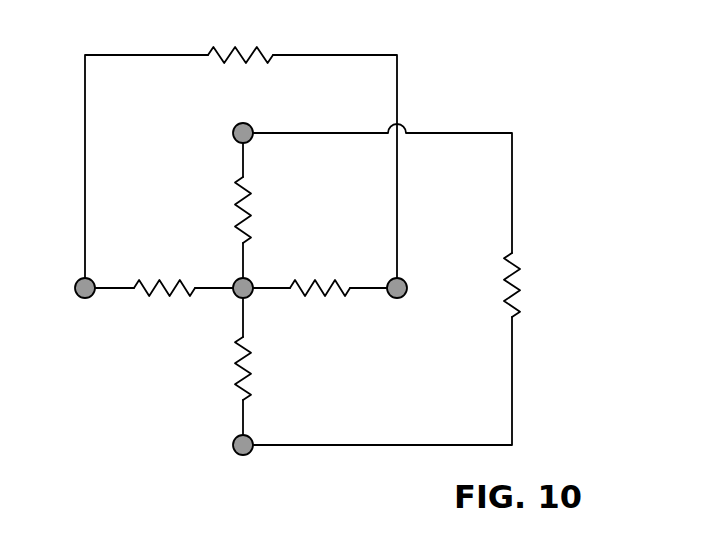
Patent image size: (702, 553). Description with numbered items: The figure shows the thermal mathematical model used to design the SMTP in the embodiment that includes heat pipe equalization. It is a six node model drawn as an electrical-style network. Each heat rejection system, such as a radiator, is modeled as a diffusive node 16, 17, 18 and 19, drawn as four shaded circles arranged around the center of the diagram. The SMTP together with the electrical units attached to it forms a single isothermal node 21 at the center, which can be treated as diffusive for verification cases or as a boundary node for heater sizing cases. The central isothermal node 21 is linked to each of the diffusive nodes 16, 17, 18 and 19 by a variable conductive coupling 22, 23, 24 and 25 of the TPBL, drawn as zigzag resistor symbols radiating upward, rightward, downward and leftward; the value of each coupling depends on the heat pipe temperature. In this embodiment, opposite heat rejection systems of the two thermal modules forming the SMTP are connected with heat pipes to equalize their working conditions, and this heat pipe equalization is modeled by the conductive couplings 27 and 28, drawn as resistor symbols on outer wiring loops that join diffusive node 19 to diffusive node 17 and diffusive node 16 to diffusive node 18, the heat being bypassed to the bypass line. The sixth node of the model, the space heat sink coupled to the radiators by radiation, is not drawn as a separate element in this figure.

The diffusive node 16 is at (256, 112).
The diffusive node 17 is at (420, 304).
The diffusive node 18 is at (260, 469).
The diffusive node 19 is at (75, 311).
The isothermal node 21 is at (260, 302).
The variable conductive coupling 22 is at (271, 210).
The variable conductive coupling 23 is at (320, 266).
The variable conductive coupling 24 is at (218, 368).
The variable conductive coupling 25 is at (164, 266).
The conductive coupling 27 is at (240, 36).
The conductive coupling 28 is at (536, 285).